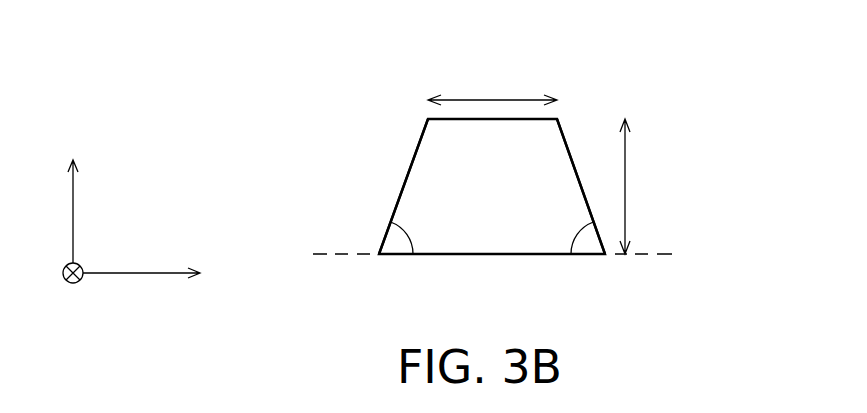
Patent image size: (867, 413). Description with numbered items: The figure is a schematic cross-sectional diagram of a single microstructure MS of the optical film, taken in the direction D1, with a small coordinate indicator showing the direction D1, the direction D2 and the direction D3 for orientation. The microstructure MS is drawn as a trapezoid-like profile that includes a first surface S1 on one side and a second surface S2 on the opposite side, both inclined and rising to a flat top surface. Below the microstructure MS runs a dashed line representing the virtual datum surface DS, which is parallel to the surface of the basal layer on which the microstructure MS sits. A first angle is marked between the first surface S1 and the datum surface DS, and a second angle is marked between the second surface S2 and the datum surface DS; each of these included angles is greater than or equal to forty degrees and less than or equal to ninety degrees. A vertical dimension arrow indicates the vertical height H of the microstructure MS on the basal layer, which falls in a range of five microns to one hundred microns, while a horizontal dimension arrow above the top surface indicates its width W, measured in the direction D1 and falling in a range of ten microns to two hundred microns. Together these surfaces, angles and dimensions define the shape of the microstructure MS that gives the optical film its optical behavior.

The microstructure MS is at (375, 140).
The first surface S1 is at (567, 140).
The second surface S2 is at (417, 140).
The width W is at (492, 84).
The vertical height H is at (635, 186).
The datum surface DS is at (648, 255).
The direction D1 is at (163, 278).
The direction D2 is at (75, 293).
The direction D3 is at (71, 193).